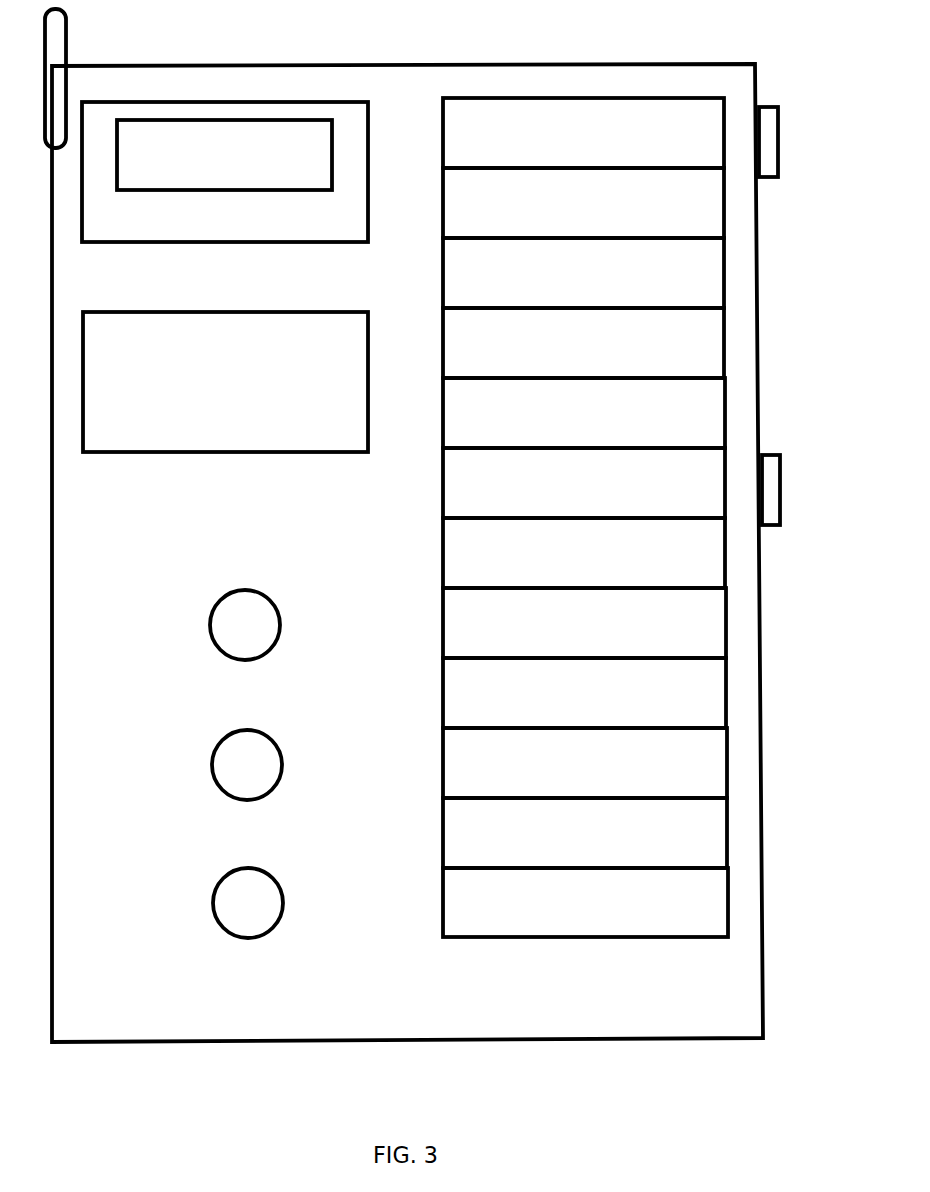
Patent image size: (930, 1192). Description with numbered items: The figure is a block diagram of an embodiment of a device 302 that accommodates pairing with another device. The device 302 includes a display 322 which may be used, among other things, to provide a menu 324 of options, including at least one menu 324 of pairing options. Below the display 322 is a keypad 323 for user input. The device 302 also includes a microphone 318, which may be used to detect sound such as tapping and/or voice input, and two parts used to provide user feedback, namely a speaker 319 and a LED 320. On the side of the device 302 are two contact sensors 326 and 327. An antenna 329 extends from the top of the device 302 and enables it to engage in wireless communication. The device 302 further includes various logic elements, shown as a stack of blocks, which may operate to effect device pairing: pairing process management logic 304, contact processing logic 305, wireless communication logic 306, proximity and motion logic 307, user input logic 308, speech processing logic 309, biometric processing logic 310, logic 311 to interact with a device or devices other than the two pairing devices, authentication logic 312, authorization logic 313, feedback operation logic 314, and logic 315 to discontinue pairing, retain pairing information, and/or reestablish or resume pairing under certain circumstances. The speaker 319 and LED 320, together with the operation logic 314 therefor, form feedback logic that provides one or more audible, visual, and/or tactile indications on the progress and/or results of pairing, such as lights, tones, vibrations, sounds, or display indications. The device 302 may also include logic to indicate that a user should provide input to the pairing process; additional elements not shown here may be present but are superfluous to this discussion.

The device 302 is at (430, 1043).
The pairing process management logic 304 is at (583, 133).
The contact processing logic 305 is at (583, 203).
The wireless communication logic 306 is at (583, 273).
The proximity and motion logic 307 is at (583, 343).
The user input logic 308 is at (584, 413).
The speech processing logic 309 is at (584, 483).
The biometric processing logic 310 is at (584, 553).
The logic to interact with other devices 311 is at (584, 623).
The authentication logic 312 is at (584, 693).
The authorization logic 313 is at (585, 763).
The operation logic 314 is at (585, 833).
The logic to discontinue, retain, or resume pairing 315 is at (585, 902).
The microphone 318 is at (208, 628).
The speaker 319 is at (208, 768).
The LED 320 is at (210, 906).
The display 322 is at (225, 172).
The keypad 323 is at (225, 382).
The menu 324 is at (224, 155).
The contact sensor 326 is at (779, 128).
The contact sensor 327 is at (781, 478).
The antenna 329 is at (66, 20).